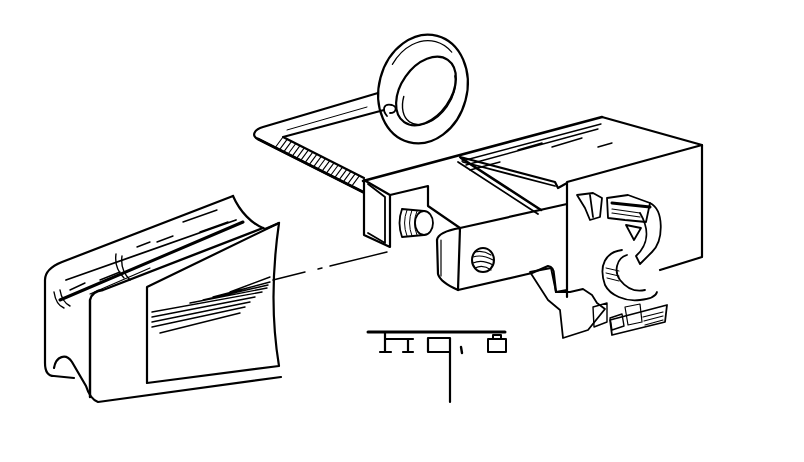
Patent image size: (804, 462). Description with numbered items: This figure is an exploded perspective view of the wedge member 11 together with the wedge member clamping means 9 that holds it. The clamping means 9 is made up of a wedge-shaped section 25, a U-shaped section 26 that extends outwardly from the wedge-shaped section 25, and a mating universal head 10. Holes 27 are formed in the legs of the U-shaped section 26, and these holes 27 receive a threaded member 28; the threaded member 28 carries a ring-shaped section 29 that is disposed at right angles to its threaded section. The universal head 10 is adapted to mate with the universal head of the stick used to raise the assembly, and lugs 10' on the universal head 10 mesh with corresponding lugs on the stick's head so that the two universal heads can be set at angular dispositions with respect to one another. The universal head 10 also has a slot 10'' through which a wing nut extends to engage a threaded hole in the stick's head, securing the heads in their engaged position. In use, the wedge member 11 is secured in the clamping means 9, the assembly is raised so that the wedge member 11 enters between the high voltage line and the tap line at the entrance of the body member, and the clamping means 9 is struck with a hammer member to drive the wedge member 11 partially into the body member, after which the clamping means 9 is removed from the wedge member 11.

The wedge member clamping means 9 is at (582, 121).
The mating universal head 10 is at (659, 330).
The lugs 10' is at (577, 318).
The slot 10'' is at (658, 246).
The wedge member 11 is at (137, 392).
The wedge-shaped section 25 is at (702, 202).
The U-shaped section 26 is at (450, 160).
The holes 27 is at (408, 223).
The threaded member 28 is at (330, 163).
The ring-shaped section 29 is at (457, 62).